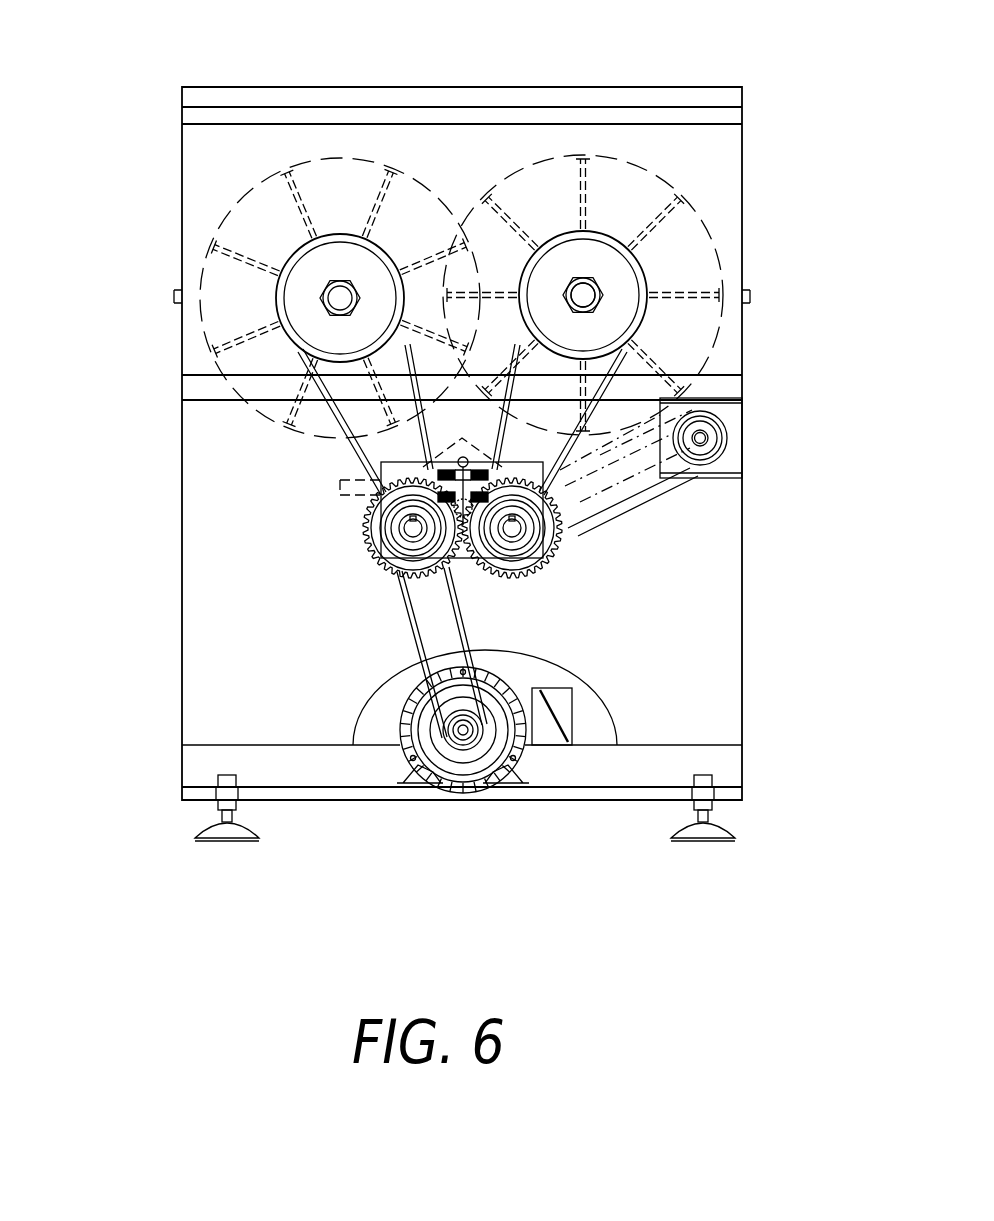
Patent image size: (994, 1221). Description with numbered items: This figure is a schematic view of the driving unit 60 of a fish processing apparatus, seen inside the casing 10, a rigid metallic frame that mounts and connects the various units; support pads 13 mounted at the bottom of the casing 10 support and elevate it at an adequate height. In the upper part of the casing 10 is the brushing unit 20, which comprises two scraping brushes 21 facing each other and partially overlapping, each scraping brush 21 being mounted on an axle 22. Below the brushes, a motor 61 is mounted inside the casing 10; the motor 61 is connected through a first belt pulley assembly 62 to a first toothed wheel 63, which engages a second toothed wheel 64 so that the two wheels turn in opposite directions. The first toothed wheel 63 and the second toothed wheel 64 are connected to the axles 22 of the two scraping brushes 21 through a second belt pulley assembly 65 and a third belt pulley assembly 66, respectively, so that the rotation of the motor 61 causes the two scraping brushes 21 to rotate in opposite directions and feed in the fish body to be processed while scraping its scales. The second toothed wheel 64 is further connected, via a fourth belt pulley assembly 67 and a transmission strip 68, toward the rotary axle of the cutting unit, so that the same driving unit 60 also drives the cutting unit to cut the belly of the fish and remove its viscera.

The casing 10 is at (182, 152).
The support pads 13 is at (205, 832).
The brushing unit 20 is at (349, 128).
The scraping brushes 21 is at (283, 172).
The axle 22 is at (598, 292).
The driving unit 60 is at (612, 554).
The motor 61 is at (463, 765).
The first belt pulley assembly 62 is at (410, 622).
The first toothed wheel 63 is at (365, 535).
The second toothed wheel 64 is at (553, 558).
The second belt pulley assembly 65 is at (345, 450).
The third belt pulley assembly 66 is at (618, 400).
The fourth belt pulley assembly 67 is at (640, 493).
The transmission strip 68 is at (655, 458).